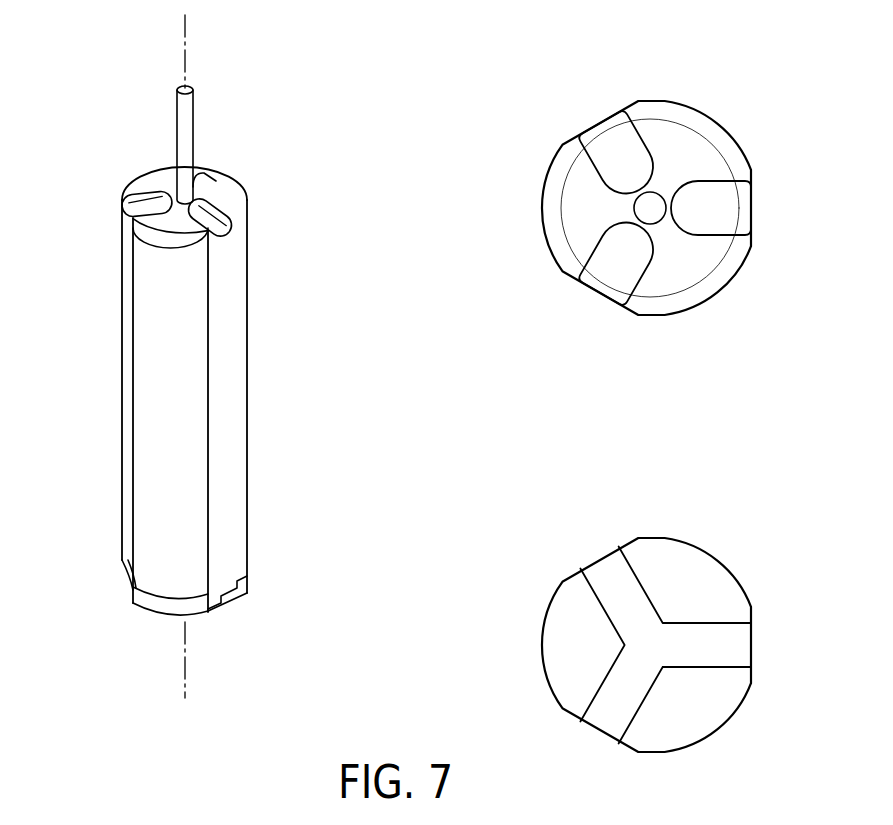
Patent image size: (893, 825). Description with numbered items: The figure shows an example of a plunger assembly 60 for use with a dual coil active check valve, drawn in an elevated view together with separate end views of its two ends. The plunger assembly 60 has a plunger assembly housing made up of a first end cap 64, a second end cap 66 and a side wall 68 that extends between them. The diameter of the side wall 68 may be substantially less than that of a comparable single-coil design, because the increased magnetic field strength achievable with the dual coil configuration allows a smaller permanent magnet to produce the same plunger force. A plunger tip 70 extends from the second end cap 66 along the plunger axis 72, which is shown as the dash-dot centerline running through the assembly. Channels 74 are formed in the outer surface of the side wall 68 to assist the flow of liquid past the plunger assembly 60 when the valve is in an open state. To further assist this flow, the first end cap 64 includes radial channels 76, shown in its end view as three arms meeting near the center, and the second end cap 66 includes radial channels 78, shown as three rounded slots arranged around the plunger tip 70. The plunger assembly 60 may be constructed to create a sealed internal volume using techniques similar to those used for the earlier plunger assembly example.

The plunger assembly 60 is at (411, 390).
The first end cap 64 is at (123, 578).
The second end cap 66 is at (444, 173).
The side wall 68 is at (142, 397).
The plunger tip 70 is at (194, 115).
The plunger axis 72 is at (186, 34).
The channels 74 is at (122, 293).
The radial channels 76 is at (604, 573).
The radial channels 78 is at (200, 176).